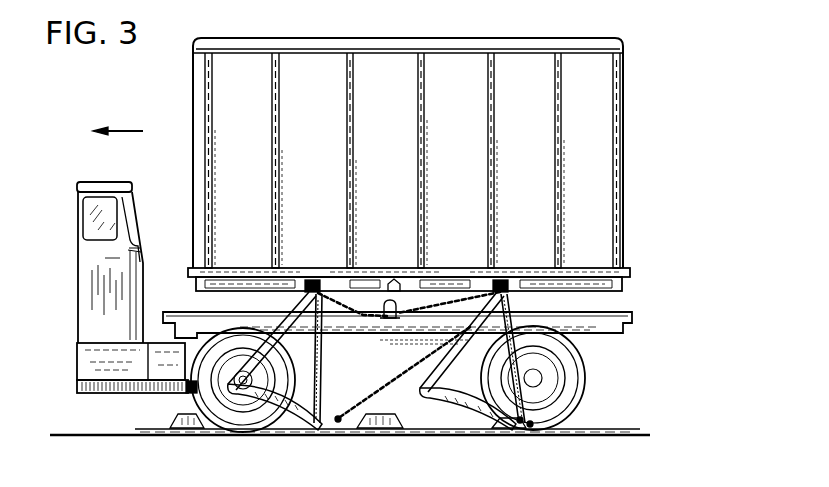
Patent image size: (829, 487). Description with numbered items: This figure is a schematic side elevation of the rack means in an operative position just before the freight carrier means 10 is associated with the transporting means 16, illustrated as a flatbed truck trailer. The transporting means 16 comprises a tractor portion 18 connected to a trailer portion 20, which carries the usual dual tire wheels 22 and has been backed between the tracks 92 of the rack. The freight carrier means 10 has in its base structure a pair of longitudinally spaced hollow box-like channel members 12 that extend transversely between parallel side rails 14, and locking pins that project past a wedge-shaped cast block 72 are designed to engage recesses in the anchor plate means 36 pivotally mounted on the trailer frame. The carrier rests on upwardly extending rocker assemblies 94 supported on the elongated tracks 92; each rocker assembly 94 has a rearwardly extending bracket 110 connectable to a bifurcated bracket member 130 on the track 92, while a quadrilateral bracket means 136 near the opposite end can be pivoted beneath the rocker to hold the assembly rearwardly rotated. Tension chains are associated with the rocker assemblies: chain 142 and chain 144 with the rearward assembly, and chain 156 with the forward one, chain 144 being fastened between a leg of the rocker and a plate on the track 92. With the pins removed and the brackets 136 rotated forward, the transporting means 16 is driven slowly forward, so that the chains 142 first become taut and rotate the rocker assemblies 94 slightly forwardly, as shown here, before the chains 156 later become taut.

The freight carrier means 10 is at (617, 157).
The hollow box-like channel member 12 is at (309, 282).
The side rail 14 is at (612, 283).
The transporting means 16 is at (85, 400).
The tractor portion 18 is at (143, 262).
The trailer portion 20 is at (623, 334).
The dual tire wheels 22 is at (572, 398).
The anchor plate means 36 is at (382, 306).
The wedge-shaped cast block 72 is at (401, 284).
The track 92 is at (420, 434).
The rocker assembly 94 is at (318, 379).
The bracket 110 is at (520, 418).
The bifurcated bracket member 130 is at (537, 432).
The bracket means 136 is at (192, 430).
The chain 142 is at (455, 300).
The chain 144 is at (349, 419).
The chain 156 is at (346, 314).